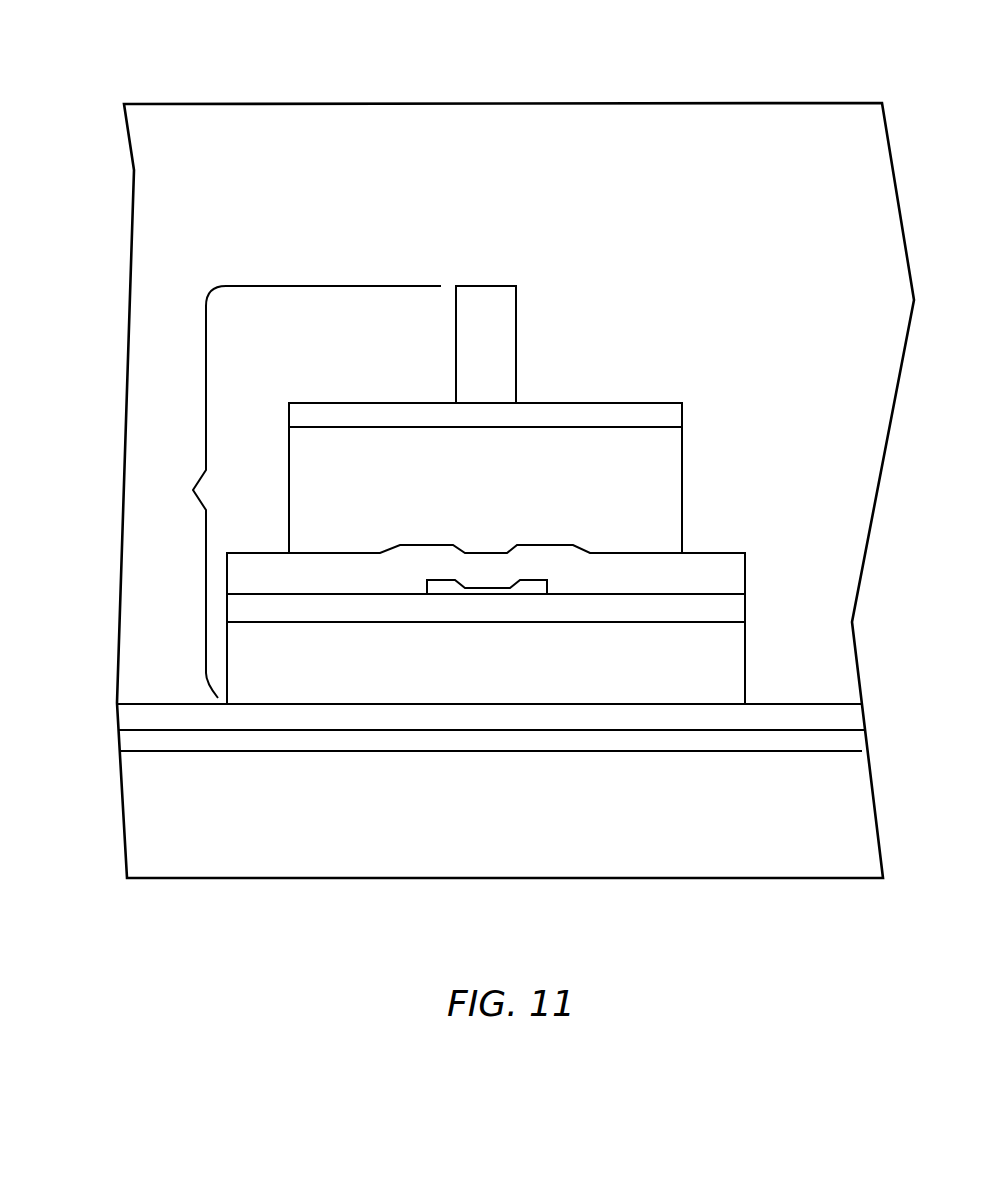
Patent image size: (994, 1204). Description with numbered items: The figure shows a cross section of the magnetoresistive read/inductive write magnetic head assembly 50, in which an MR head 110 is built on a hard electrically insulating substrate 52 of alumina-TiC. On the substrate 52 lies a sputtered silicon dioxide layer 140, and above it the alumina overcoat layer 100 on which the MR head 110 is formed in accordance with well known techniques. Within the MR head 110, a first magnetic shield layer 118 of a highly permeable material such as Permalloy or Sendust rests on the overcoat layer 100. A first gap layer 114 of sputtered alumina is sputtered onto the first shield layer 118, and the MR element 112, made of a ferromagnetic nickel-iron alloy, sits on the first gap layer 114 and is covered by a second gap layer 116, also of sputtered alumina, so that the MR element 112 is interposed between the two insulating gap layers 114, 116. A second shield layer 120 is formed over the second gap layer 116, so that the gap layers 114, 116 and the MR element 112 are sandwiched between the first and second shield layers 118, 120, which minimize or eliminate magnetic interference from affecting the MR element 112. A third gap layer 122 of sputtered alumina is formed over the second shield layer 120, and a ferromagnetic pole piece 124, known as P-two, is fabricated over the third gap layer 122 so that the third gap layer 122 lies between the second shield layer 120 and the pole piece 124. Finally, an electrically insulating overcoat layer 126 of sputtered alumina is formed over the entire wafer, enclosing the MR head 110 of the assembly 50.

The MR head assembly 50 is at (572, 64).
The hard electrically insulating substrate 52 is at (513, 813).
The alumina overcoat layer 100 is at (128, 715).
The sputtered silicon dioxide layer 140 is at (130, 739).
The magnetoresistive read/inductive write head 110 is at (296, 492).
The MR element 112 is at (531, 584).
The first gap layer 114 is at (741, 608).
The second gap layer 116 is at (745, 573).
The first magnetic shield layer 118 is at (741, 659).
The second shield layer 120 is at (670, 474).
The third gap layer 122 is at (641, 411).
The pole piece 124 is at (516, 335).
The electrically insulating overcoat layer 126 is at (663, 166).